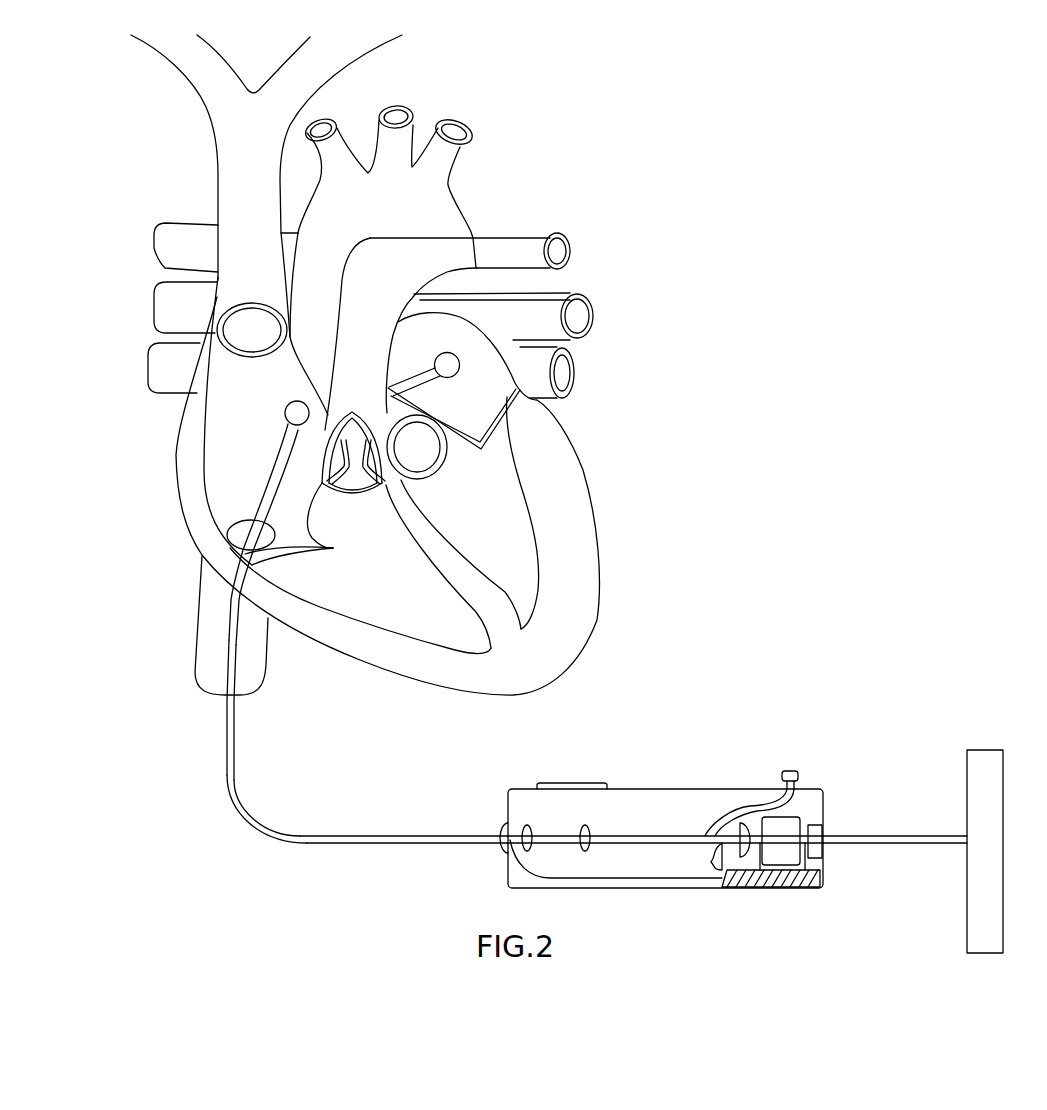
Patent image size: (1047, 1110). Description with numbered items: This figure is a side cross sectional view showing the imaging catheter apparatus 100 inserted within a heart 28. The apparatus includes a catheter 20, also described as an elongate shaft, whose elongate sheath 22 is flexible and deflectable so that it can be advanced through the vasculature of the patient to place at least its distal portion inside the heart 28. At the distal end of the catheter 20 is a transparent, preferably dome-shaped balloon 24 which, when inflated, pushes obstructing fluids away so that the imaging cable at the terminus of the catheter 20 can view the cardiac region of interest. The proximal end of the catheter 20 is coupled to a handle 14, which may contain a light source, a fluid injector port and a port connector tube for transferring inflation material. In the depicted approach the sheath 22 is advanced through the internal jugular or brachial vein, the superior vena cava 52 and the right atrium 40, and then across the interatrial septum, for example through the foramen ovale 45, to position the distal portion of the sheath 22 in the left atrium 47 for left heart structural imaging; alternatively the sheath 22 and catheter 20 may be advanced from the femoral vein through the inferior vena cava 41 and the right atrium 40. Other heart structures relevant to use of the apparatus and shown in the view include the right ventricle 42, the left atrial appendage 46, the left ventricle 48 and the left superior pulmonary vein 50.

The handle 14 is at (840, 752).
The catheter 20 is at (197, 747).
The elongate sheath 22 is at (372, 836).
The balloon 24 is at (450, 353).
The heart 28 is at (742, 496).
The right atrium 40 is at (244, 494).
The inferior vena cava 41 is at (225, 605).
The right ventricle 42 is at (407, 602).
The foramen ovale 45 is at (276, 413).
The left atrial appendage 46 is at (519, 397).
The left atrium 47 is at (480, 371).
The left ventricle 48 is at (516, 578).
The left superior pulmonary vein 50 is at (576, 318).
The superior vena cava 52 is at (247, 292).
The imaging catheter apparatus 100 is at (523, 795).